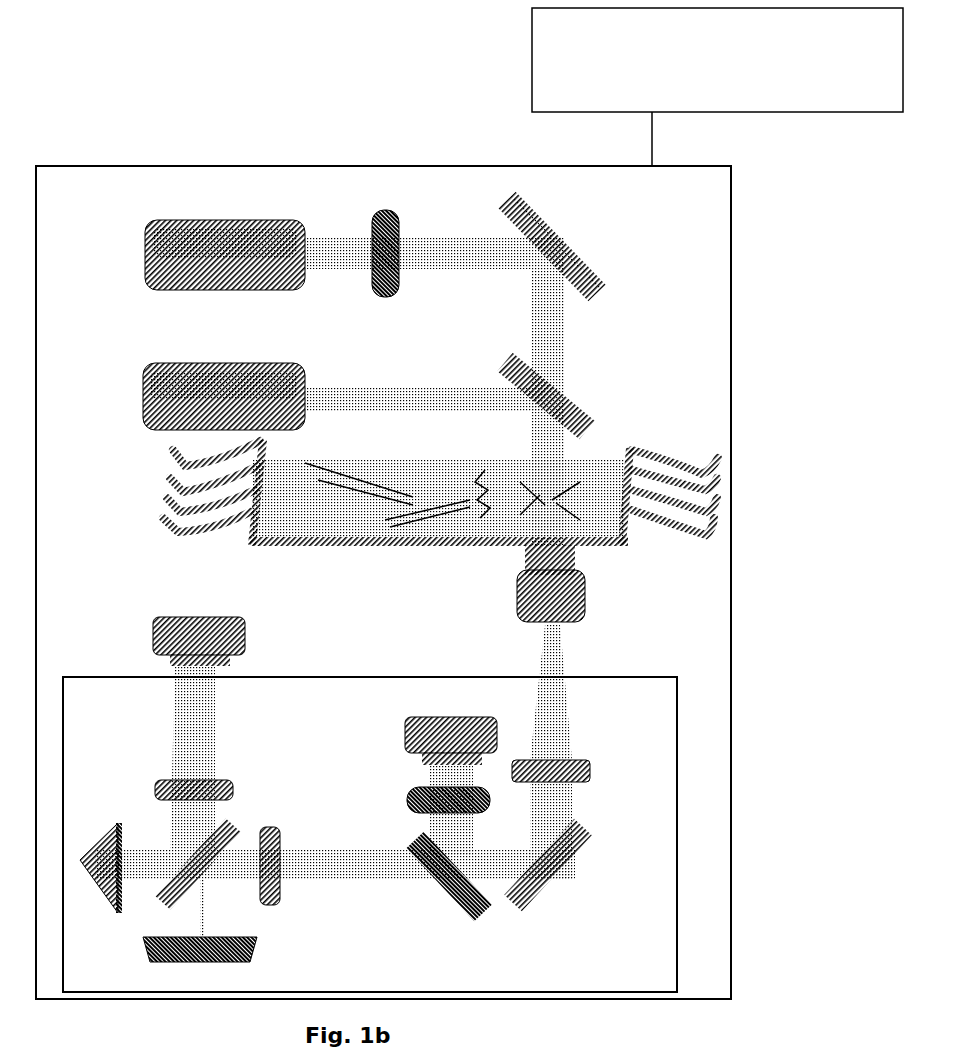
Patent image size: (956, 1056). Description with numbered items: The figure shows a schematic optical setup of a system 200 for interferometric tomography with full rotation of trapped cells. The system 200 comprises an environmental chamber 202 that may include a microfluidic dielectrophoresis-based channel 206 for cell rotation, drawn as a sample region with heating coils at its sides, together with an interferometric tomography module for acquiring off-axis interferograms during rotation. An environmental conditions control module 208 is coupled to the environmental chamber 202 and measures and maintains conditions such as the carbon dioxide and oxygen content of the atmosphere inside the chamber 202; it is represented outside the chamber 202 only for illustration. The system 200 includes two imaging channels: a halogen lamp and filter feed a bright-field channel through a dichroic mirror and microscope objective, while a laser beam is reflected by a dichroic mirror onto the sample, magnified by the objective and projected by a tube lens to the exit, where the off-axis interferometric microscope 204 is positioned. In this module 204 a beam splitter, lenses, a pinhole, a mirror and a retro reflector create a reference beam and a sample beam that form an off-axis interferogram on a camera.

The system 200 is at (112, 113).
The environmental chamber 202 is at (476, 158).
The interferometric microscope 204 is at (444, 668).
The microfluidic dielectrophoresis-based channel 206 is at (304, 508).
The environmental conditions control module 208 is at (717, 60).